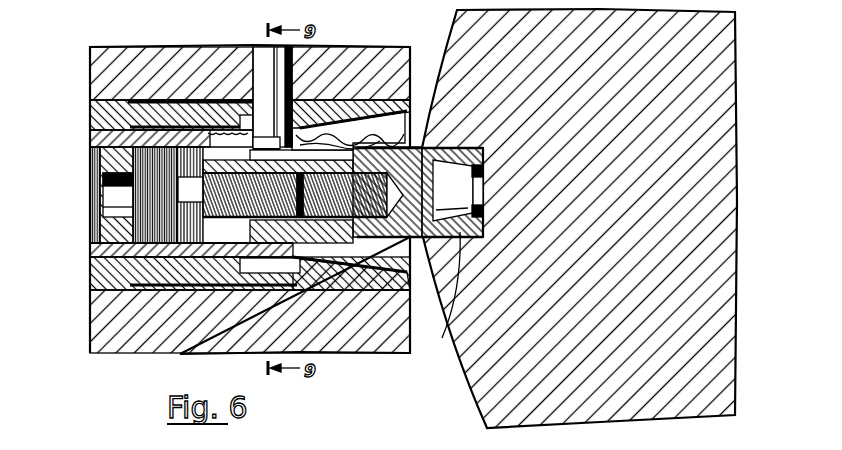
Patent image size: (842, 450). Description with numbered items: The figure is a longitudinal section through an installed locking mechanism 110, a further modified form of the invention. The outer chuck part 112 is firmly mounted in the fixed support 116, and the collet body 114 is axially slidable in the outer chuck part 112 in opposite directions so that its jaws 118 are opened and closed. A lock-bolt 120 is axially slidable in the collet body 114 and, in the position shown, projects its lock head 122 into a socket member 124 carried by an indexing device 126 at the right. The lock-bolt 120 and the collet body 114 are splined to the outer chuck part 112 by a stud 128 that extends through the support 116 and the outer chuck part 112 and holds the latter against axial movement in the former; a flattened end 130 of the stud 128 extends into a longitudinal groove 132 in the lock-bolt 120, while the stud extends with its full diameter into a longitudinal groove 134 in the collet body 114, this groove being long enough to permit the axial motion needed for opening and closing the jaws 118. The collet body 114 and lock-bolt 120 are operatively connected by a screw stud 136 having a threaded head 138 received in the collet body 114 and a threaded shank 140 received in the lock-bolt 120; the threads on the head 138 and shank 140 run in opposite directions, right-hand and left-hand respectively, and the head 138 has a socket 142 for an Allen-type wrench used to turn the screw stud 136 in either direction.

The locking mechanism 110 is at (228, 187).
The outer chuck part 112 is at (108, 112).
The collet body 114 is at (118, 254).
The fixed support 116 is at (360, 57).
The jaws 118 is at (420, 125).
The lock-bolt 120 is at (293, 258).
The lock head 122 is at (462, 197).
The socket member 124 is at (439, 293).
The indexing device 126 is at (440, 46).
The stud 128 is at (262, 68).
The flattened end 130 is at (267, 153).
The longitudinal groove 132 is at (310, 160).
The longitudinal groove 134 is at (263, 134).
The screw stud 136 is at (191, 195).
The threaded head 138 is at (120, 228).
The threaded shank 140 is at (303, 208).
The socket 142 is at (105, 191).